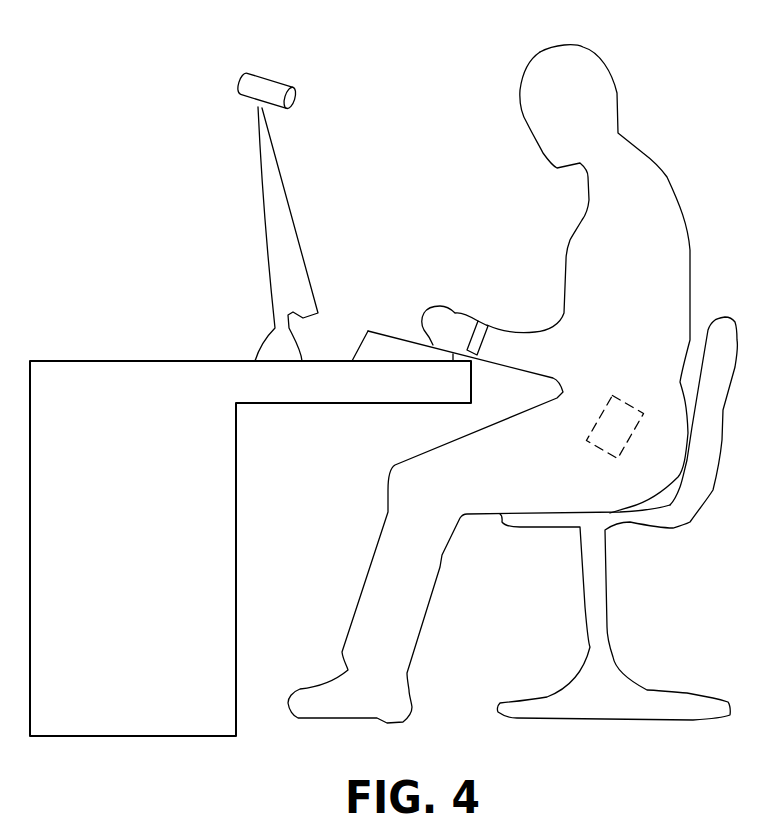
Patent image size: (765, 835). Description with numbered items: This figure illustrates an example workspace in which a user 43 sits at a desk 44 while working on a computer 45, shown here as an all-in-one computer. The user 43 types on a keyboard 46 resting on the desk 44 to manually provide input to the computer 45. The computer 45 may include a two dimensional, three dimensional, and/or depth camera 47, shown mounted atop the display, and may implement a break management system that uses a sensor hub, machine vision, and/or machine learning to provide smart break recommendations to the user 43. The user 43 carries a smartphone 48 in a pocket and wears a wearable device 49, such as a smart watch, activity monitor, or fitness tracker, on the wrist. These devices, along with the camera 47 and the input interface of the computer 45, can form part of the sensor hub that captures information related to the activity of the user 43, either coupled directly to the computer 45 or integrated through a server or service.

The user 43 is at (560, 44).
The desk 44 is at (45, 361).
The computer 45 is at (268, 223).
The keyboard 46 is at (360, 347).
The camera 47 is at (253, 73).
The smartphone 48 is at (620, 397).
The wearable device 49 is at (488, 322).